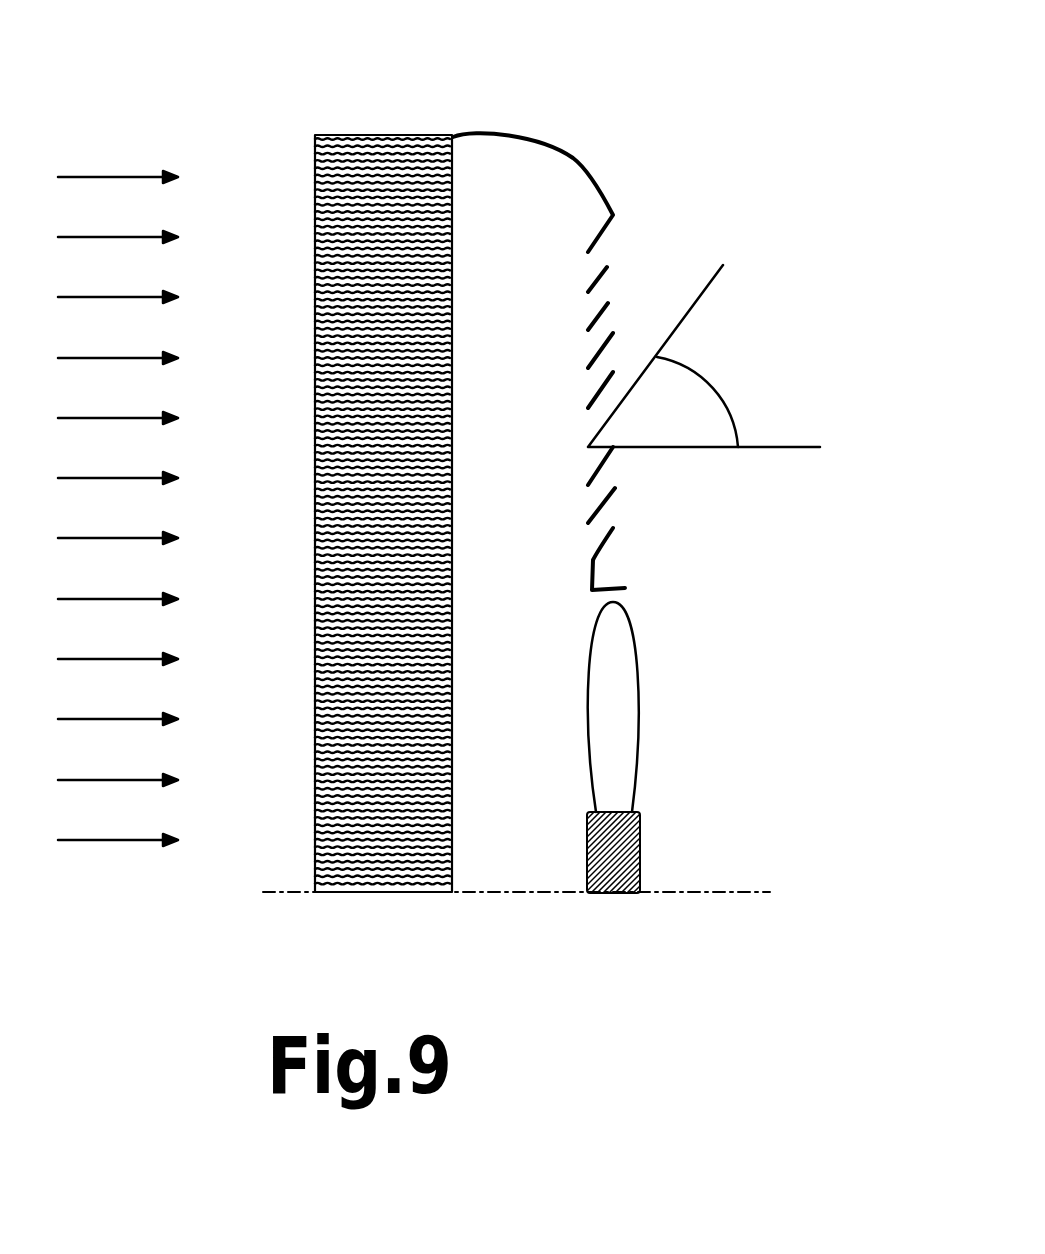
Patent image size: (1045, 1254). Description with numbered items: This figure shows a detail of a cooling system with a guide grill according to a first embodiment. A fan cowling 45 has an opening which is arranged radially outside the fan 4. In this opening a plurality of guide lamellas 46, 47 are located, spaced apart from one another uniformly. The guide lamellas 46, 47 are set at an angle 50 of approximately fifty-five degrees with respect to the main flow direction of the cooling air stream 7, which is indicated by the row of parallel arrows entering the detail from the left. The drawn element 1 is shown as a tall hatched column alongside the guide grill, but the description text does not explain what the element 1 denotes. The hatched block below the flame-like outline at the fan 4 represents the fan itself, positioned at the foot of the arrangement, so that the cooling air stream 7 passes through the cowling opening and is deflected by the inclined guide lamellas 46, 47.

The absorber column / heat exchanger element 1 is at (317, 813).
The fan 4 is at (613, 787).
The cooling air stream 7 is at (100, 866).
The fan cowling 45 is at (587, 175).
The guide lamella 46 is at (613, 262).
The guide lamella 47 is at (613, 297).
The angle 50 is at (704, 356).